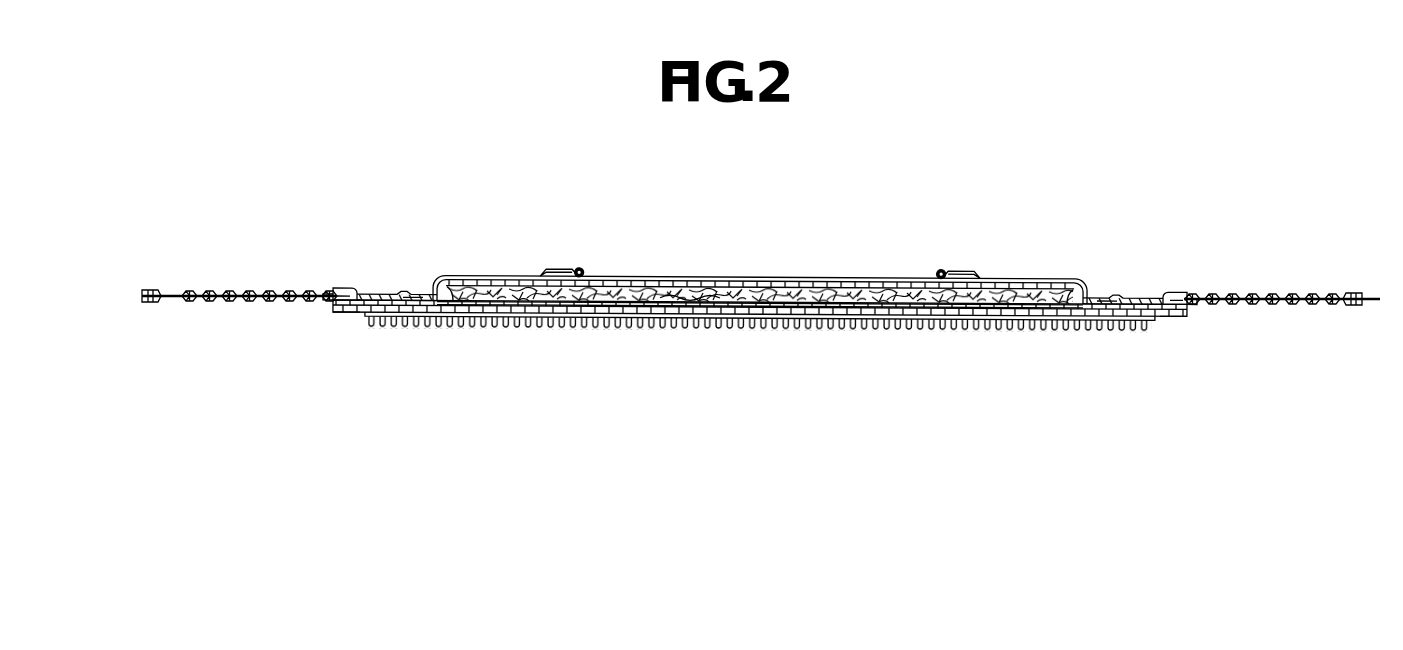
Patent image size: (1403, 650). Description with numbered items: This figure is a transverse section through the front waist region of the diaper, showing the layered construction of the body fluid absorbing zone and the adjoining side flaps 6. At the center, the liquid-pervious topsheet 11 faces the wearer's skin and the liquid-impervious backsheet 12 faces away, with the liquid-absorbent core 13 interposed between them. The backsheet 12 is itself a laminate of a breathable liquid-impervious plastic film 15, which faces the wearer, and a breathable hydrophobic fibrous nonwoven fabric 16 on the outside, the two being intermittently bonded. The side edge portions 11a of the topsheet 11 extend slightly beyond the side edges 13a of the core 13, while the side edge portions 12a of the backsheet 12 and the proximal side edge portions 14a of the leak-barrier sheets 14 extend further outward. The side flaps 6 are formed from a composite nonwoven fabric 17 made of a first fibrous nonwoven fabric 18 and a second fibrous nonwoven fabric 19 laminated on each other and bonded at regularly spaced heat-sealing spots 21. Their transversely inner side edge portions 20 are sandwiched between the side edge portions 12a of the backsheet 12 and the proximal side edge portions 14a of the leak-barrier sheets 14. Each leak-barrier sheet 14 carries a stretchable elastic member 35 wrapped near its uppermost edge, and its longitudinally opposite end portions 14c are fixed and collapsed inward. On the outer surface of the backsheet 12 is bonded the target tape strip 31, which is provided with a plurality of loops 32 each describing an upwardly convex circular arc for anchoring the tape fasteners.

The side flaps 6 is at (146, 290).
The topsheet 11 is at (770, 282).
The side edge portions of the topsheet 11a is at (412, 302).
The backsheet 12 is at (808, 312).
The side edge portions of the backsheet 12a is at (350, 311).
The liquid-absorbent core 13 is at (826, 290).
The side edges of the core 13a is at (455, 300).
The leak-barrier sheets 14 is at (447, 283).
The proximal side edge portions of the leak-barrier sheets 14a is at (388, 293).
The longitudinally opposite end portions of the leak-barrier sheets 14c is at (520, 276).
The breathable liquid-impervious plastic film 15 is at (692, 299).
The breathable hydrophobic fibrous nonwoven fabric 16 is at (653, 308).
The composite nonwoven fabric 17 is at (147, 303).
The first fibrous nonwoven fabric 18 is at (228, 302).
The second fibrous nonwoven fabric 19 is at (215, 290).
The transversely inner side edge portions 20 is at (336, 290).
The heat-sealing spots 21 is at (184, 290).
The target tape strip 31 is at (858, 319).
The loops 32 is at (590, 323).
The stretchable elastic member 35 is at (583, 270).